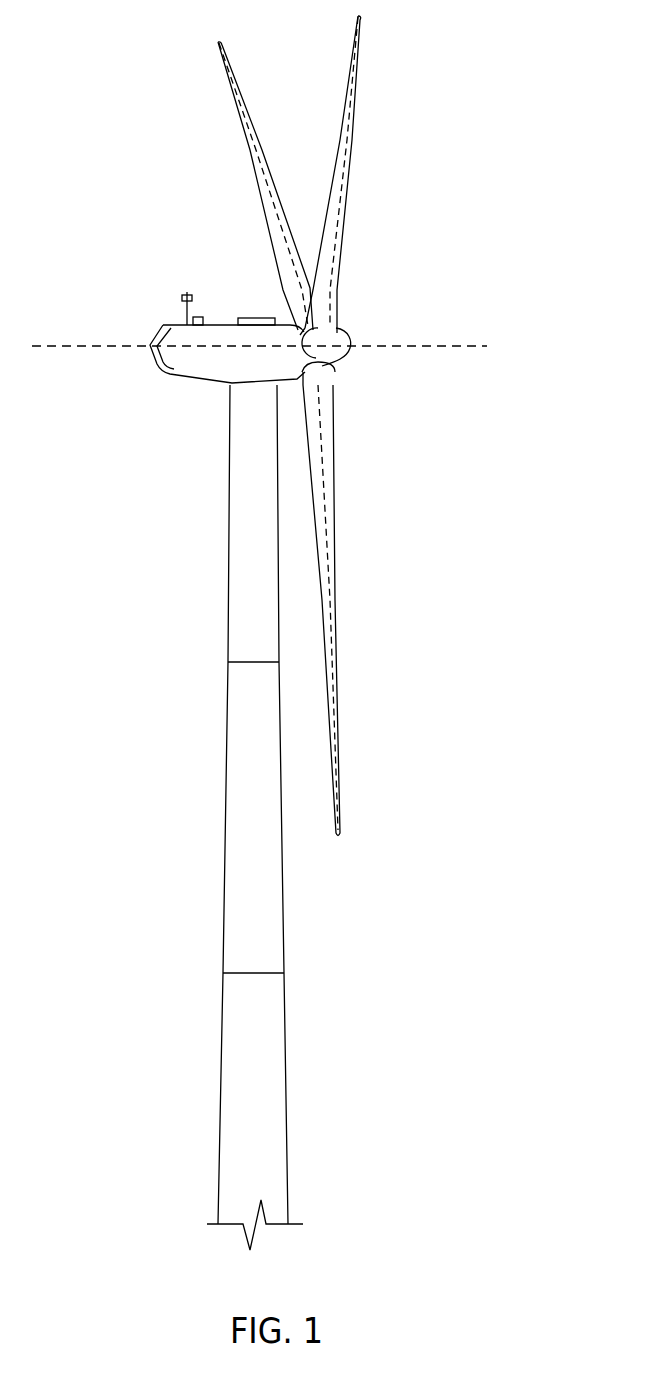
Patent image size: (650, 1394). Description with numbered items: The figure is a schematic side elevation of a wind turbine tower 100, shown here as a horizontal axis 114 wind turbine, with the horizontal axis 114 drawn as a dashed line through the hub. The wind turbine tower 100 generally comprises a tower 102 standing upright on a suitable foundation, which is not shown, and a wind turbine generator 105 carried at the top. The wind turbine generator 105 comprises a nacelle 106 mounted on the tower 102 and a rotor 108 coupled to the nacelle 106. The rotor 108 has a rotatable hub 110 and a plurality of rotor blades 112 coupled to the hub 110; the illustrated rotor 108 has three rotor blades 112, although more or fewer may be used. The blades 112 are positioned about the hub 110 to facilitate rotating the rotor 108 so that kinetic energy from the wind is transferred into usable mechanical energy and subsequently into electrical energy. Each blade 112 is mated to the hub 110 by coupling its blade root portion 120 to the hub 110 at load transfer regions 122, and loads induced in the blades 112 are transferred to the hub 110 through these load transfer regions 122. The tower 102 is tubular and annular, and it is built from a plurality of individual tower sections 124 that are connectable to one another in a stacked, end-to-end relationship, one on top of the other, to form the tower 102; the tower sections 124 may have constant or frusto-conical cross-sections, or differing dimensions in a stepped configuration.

The wind turbine tower 100 is at (150, 64).
The tower 102 is at (222, 1002).
The wind turbine generator 105 is at (362, 315).
The nacelle 106 is at (178, 376).
The rotor 108 is at (362, 184).
The rotatable hub 110 is at (352, 342).
The rotor blades 112 is at (248, 148).
The horizontal axis 114 is at (458, 349).
The blade root portion 120 is at (334, 296).
The load transfer regions 122 is at (324, 370).
The tower sections 124 is at (228, 538).